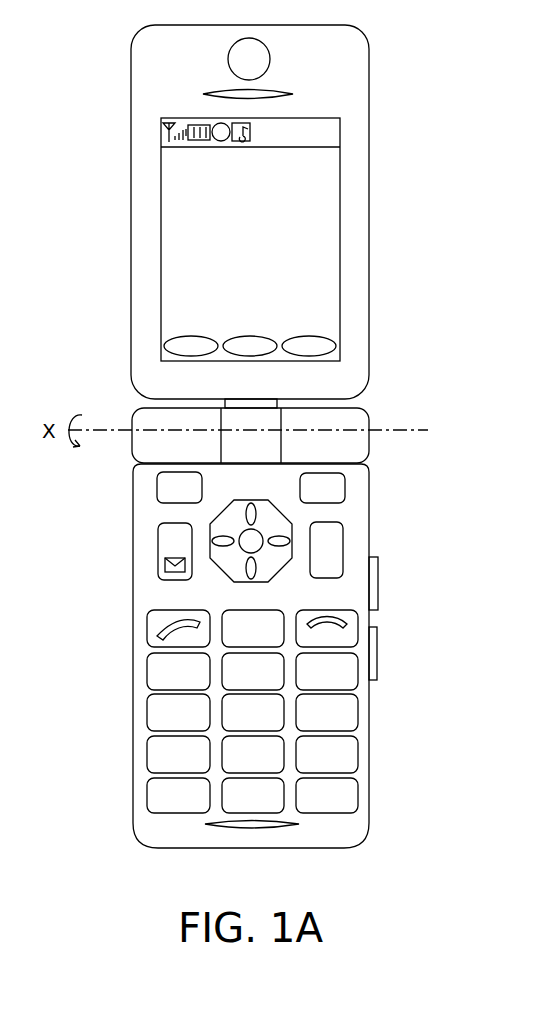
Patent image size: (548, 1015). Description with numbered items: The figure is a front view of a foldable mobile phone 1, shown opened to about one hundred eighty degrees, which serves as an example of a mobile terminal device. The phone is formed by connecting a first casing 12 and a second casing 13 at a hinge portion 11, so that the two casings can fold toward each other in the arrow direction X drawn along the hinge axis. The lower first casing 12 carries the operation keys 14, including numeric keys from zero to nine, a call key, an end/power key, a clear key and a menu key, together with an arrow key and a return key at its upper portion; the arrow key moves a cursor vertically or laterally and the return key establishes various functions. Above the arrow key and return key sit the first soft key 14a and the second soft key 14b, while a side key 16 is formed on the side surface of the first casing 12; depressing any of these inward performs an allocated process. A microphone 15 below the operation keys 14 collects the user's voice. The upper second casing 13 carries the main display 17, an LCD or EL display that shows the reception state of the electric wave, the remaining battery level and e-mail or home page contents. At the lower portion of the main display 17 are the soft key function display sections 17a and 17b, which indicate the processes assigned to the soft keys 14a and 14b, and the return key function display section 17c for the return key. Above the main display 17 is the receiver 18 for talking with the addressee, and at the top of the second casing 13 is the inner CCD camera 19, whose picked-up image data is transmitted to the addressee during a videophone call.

The mobile phone 1 is at (388, 695).
The hinge portion 11 is at (365, 412).
The first casing 12 is at (369, 520).
The second casing 13 is at (353, 198).
The operation keys 14 is at (119, 488).
The first soft key 14a is at (345, 488).
The second soft key 14b is at (157, 487).
The microphone 15 is at (292, 825).
The side key 16 is at (378, 575).
The main display 17 is at (342, 158).
The soft key function display section 17a is at (332, 338).
The soft key function display section 17b is at (165, 348).
The return key function display section 17c is at (250, 336).
The receiver 18 is at (293, 94).
The inner CCD camera 19 is at (270, 57).